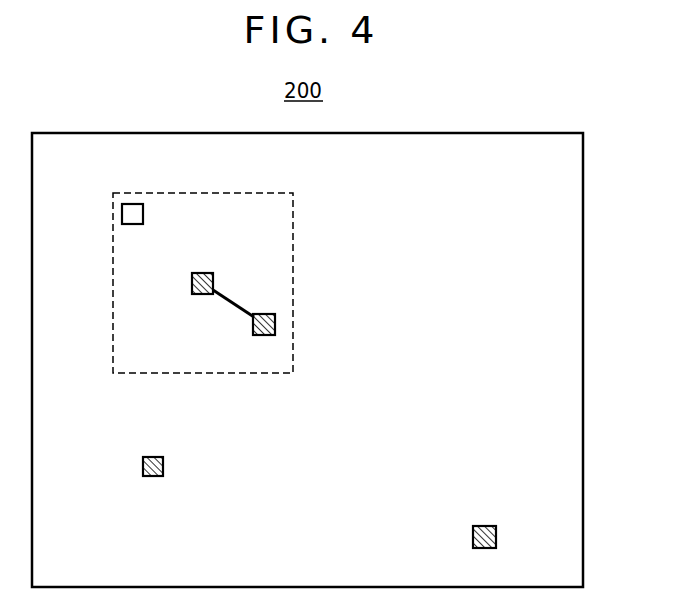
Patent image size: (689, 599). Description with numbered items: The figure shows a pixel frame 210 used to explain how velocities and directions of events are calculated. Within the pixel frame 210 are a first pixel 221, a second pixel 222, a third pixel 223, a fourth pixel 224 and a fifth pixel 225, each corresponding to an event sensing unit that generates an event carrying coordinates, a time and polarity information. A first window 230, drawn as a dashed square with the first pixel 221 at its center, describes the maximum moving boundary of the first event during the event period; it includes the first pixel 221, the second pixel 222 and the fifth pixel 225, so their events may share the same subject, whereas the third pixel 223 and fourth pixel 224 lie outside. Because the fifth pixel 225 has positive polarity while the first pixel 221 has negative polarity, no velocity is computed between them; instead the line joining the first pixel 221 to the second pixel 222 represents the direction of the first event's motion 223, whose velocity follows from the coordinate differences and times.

The pixel frame 210 is at (583, 358).
The first pixel 221 is at (200, 273).
The second pixel 222 is at (275, 321).
The third pixel 223 is at (225, 302).
The fourth pixel 224 is at (496, 537).
The fifth pixel 225 is at (122, 213).
The first window 230 is at (293, 234).